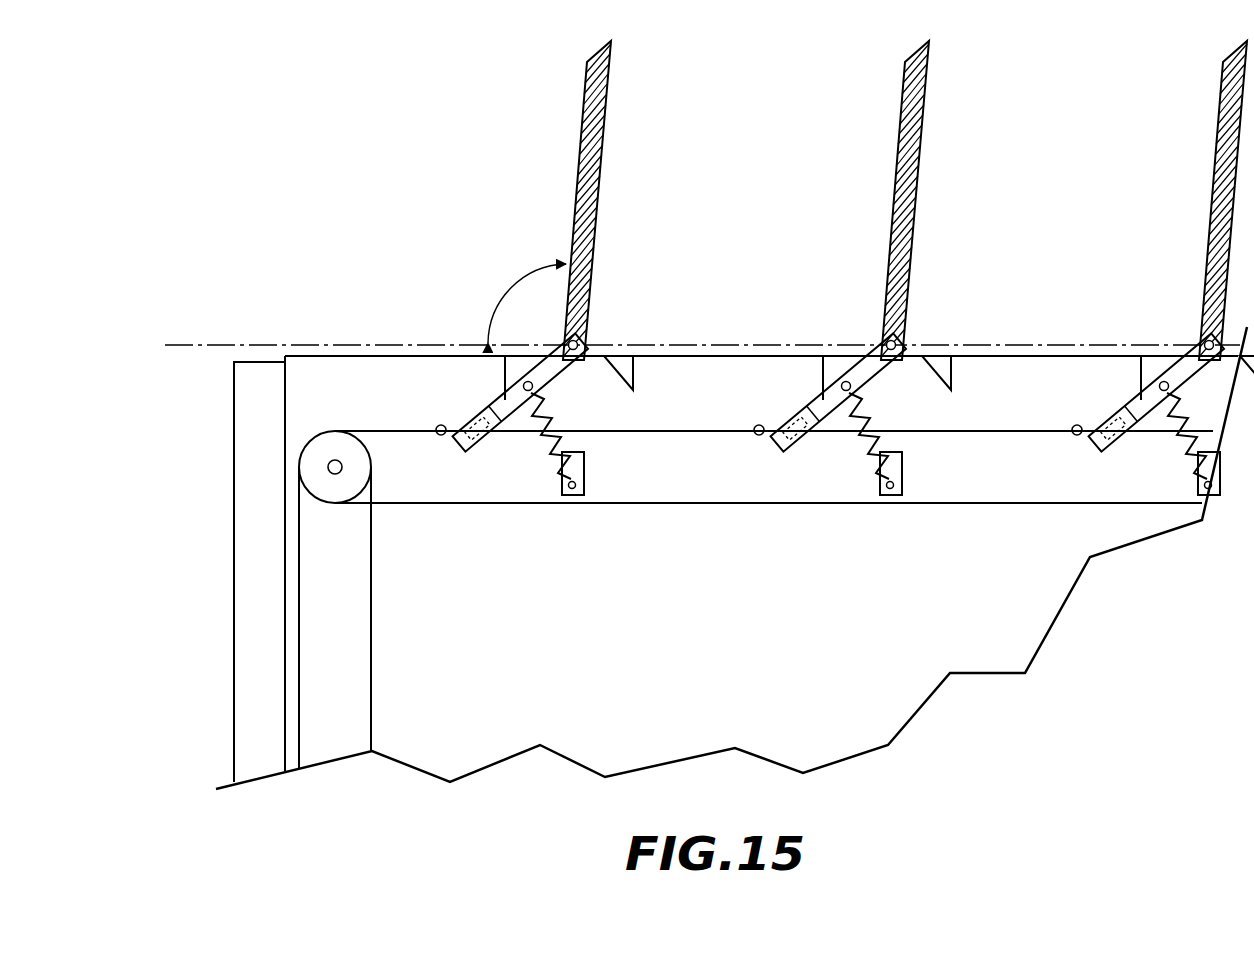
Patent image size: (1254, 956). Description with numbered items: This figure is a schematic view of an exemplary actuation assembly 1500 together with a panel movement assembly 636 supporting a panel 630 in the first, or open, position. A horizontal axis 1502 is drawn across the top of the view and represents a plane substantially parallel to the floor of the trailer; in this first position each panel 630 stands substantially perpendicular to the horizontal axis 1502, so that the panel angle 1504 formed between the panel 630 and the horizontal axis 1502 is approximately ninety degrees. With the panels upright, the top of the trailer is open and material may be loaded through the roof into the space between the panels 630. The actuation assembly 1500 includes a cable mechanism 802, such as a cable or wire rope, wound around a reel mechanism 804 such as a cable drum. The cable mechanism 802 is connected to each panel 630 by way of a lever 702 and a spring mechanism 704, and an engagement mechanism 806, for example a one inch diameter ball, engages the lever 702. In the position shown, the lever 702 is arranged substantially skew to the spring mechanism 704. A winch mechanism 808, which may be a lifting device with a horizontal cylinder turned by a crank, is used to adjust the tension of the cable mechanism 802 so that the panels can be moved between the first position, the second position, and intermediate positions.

The actuation assembly 1500 is at (305, 131).
The horizontal axis 1502 is at (250, 345).
The panel angle 1504 is at (500, 295).
The panel 630 is at (582, 194).
The panel movement assembly 636 is at (478, 272).
The lever 702 is at (508, 403).
The spring mechanism 704 is at (548, 440).
The cable mechanism 802 is at (708, 501).
The reel mechanism 804 is at (343, 447).
The engagement mechanism 806 is at (440, 426).
The winch mechanism 808 is at (383, 617).